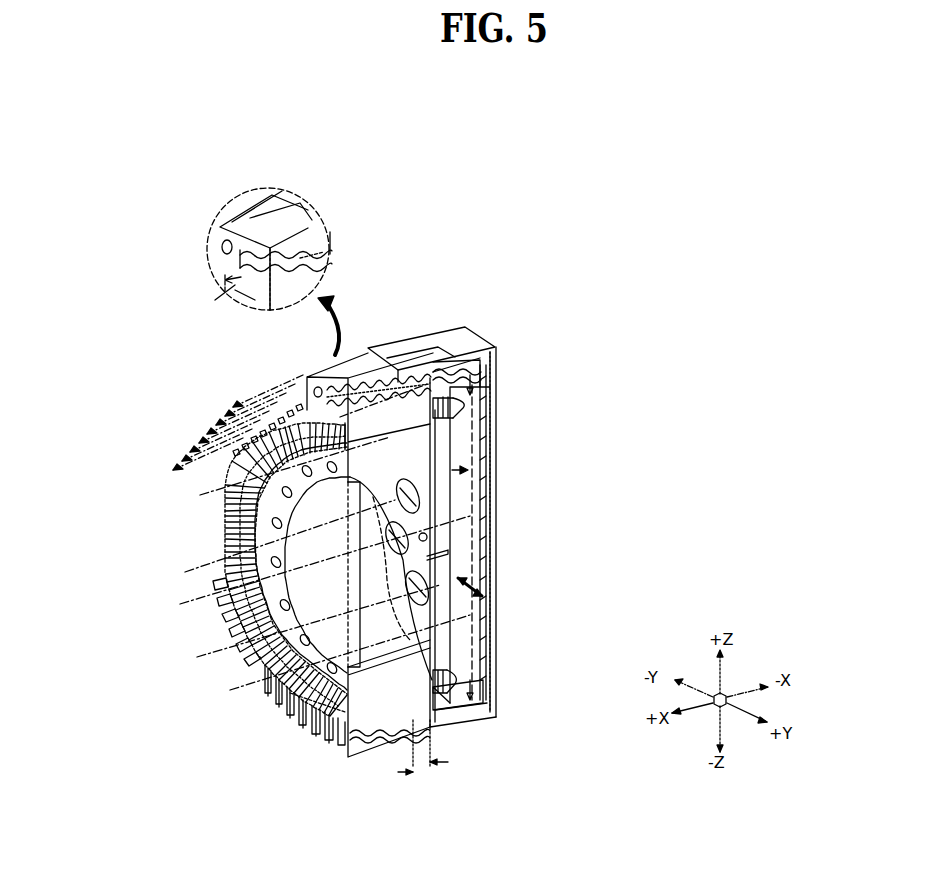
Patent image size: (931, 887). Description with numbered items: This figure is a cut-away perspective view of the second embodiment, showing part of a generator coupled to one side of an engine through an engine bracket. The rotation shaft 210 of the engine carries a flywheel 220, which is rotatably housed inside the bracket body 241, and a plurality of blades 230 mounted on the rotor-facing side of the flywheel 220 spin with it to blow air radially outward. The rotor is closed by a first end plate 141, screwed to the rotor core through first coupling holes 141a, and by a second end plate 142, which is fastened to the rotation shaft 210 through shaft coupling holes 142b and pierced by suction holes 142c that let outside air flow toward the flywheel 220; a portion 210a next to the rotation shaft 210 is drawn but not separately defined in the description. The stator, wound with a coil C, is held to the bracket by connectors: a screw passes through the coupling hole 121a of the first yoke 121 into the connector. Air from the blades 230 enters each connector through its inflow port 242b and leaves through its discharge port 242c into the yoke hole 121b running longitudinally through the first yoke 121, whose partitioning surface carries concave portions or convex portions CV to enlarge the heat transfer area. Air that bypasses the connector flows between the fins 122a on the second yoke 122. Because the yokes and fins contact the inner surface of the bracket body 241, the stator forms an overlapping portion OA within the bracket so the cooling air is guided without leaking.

The first yoke 121 is at (262, 218).
The coupling hole 121a is at (225, 240).
The yoke hole 121b is at (265, 285).
The second yoke 122 is at (282, 400).
The fins 122a is at (212, 447).
The first end plate 141 is at (262, 655).
The first coupling holes 141a is at (240, 633).
The second end plate 142 is at (224, 484).
The shaft coupling holes 142b is at (480, 496).
The suction holes 142c is at (240, 600).
The rotation shaft 210 is at (467, 537).
The fastening hole 210a is at (489, 574).
The flywheel 220 is at (492, 618).
The blade 230 is at (478, 645).
The bracket body 241 is at (428, 345).
The inflow port 242b is at (465, 700).
The discharge port 242c is at (466, 714).
The concave portions or convex portions CV is at (330, 262).
The coil C is at (290, 693).
The overlapping portion OA is at (409, 753).